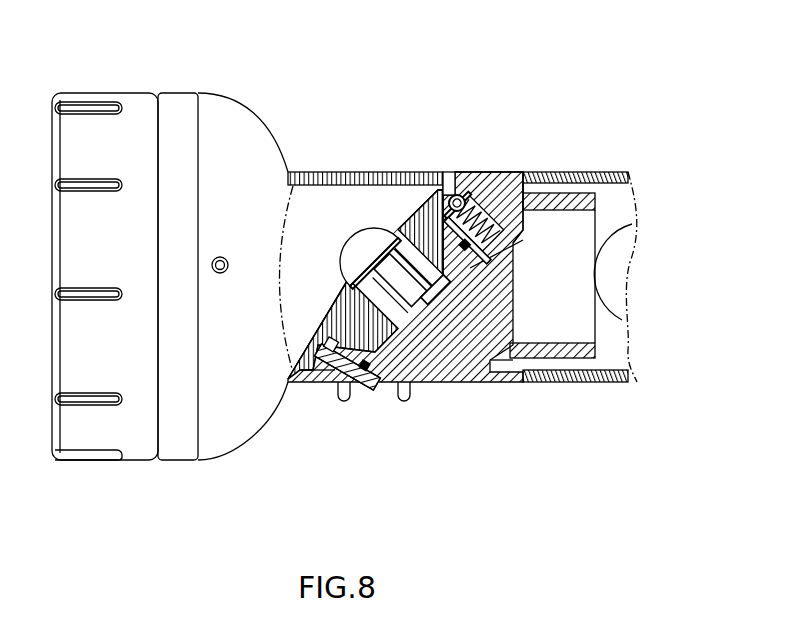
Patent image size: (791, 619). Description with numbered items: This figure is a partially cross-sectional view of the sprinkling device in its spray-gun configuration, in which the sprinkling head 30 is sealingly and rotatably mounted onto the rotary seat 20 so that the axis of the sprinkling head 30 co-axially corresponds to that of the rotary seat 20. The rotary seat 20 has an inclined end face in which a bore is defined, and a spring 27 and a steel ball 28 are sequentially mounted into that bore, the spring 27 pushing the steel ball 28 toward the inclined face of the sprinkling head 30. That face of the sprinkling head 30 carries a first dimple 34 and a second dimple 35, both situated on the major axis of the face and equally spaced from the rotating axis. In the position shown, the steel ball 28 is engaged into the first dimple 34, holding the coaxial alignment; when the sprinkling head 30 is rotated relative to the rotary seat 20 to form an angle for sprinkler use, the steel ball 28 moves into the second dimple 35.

The rotary seat 20 is at (477, 365).
The spring 27 is at (512, 172).
The steel ball 28 is at (478, 174).
The sprinkling head 30 is at (230, 142).
The first dimple 34 is at (445, 172).
The second dimple 35 is at (313, 378).